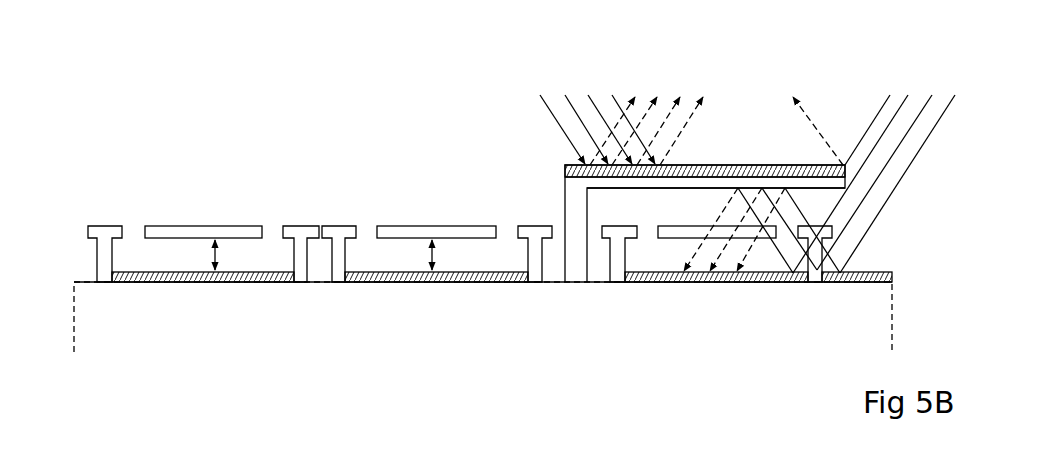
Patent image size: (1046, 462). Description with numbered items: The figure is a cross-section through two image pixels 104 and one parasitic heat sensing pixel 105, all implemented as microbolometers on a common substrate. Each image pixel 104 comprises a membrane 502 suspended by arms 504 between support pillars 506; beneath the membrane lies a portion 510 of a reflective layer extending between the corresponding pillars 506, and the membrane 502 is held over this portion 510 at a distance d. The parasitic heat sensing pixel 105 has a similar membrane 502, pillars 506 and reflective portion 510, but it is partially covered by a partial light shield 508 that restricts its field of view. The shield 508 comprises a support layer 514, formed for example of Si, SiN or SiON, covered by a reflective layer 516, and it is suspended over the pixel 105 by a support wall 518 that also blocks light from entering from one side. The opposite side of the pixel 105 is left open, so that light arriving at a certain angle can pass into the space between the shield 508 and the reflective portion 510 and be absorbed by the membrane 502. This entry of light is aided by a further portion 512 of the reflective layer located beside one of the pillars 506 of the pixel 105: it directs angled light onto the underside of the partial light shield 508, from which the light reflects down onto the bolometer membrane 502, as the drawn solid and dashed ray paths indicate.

The image pixel 104 is at (183, 154).
The parasitic heat sensing pixel 105 is at (742, 106).
The membrane 502 is at (203, 227).
The arms 504 is at (338, 227).
The support pillars 506 is at (105, 227).
The partial light shield 508 is at (659, 153).
The portion of reflective layer 510 is at (163, 283).
The further portion of reflective layer 512 is at (856, 283).
The support layer 514 is at (720, 181).
The reflective layer 516 is at (773, 168).
The support wall 518 is at (577, 283).
The distance d is at (221, 253).